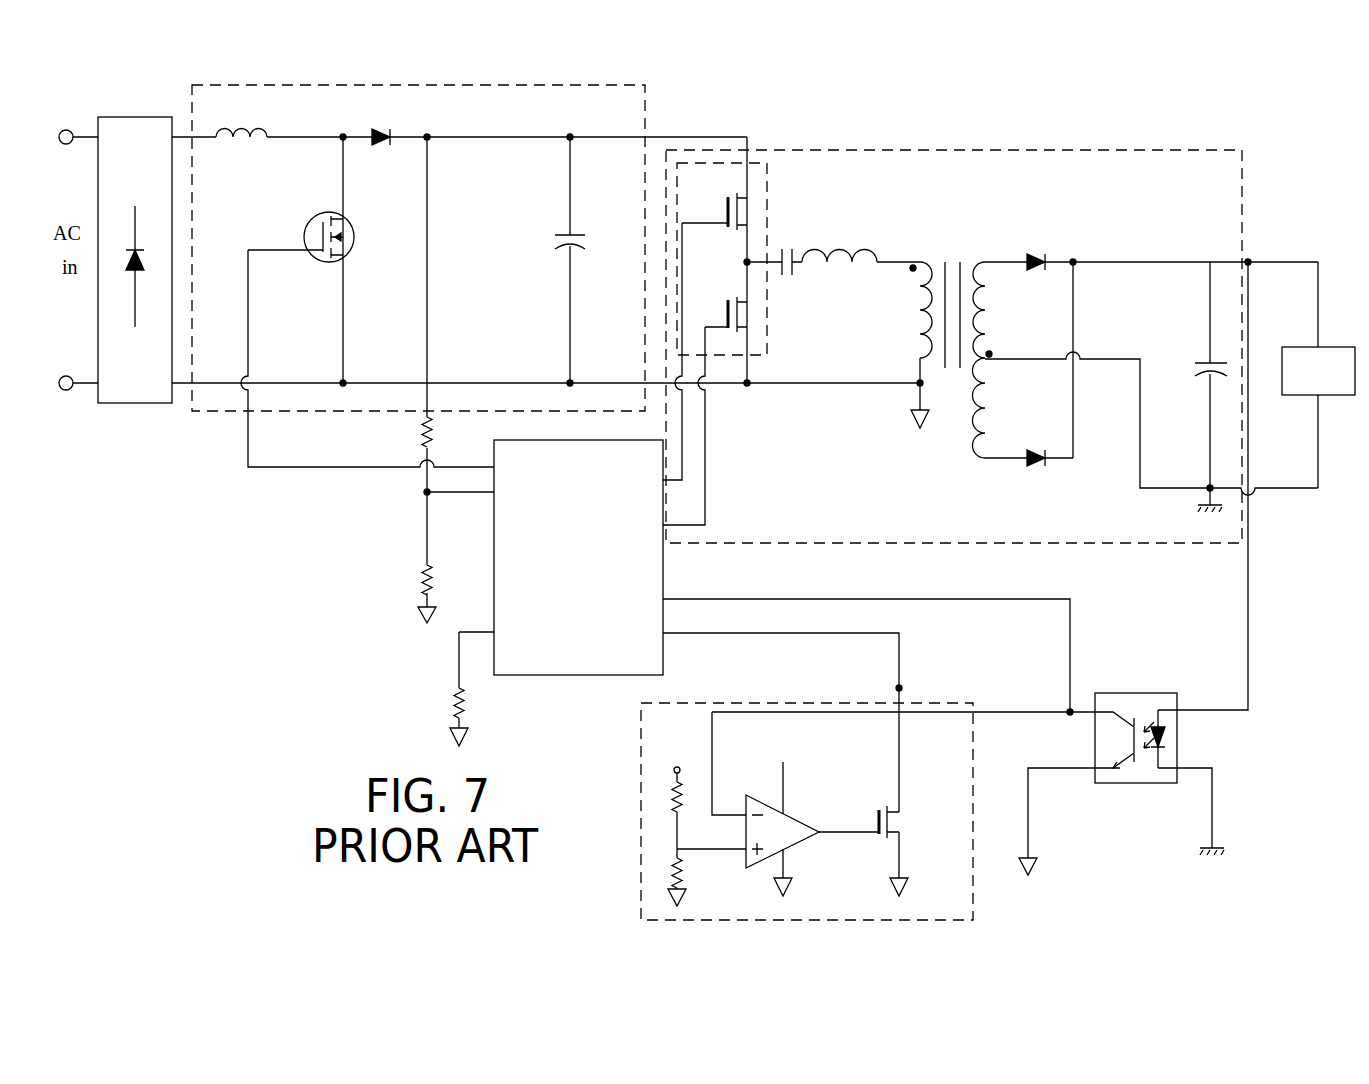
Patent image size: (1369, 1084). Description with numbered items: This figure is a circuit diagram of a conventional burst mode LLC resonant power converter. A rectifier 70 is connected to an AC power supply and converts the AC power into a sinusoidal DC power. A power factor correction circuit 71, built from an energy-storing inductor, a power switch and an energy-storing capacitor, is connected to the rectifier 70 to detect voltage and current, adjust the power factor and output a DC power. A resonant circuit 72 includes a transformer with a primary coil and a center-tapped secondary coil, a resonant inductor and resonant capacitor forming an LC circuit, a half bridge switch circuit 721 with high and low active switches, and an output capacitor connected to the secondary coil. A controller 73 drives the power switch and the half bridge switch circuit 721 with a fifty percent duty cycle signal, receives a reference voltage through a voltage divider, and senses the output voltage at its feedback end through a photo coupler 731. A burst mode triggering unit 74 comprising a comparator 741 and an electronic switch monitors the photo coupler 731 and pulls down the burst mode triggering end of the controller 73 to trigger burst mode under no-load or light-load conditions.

The rectifier 70 is at (122, 117).
The power factor correction circuit 71 is at (636, 125).
The resonant circuit 72 is at (1009, 321).
The half bridge switch circuit 721 is at (736, 167).
The controller 73 is at (657, 567).
The photo coupler 731 is at (1130, 704).
The burst mode triggering unit 74 is at (868, 781).
The comparator 741 is at (797, 838).